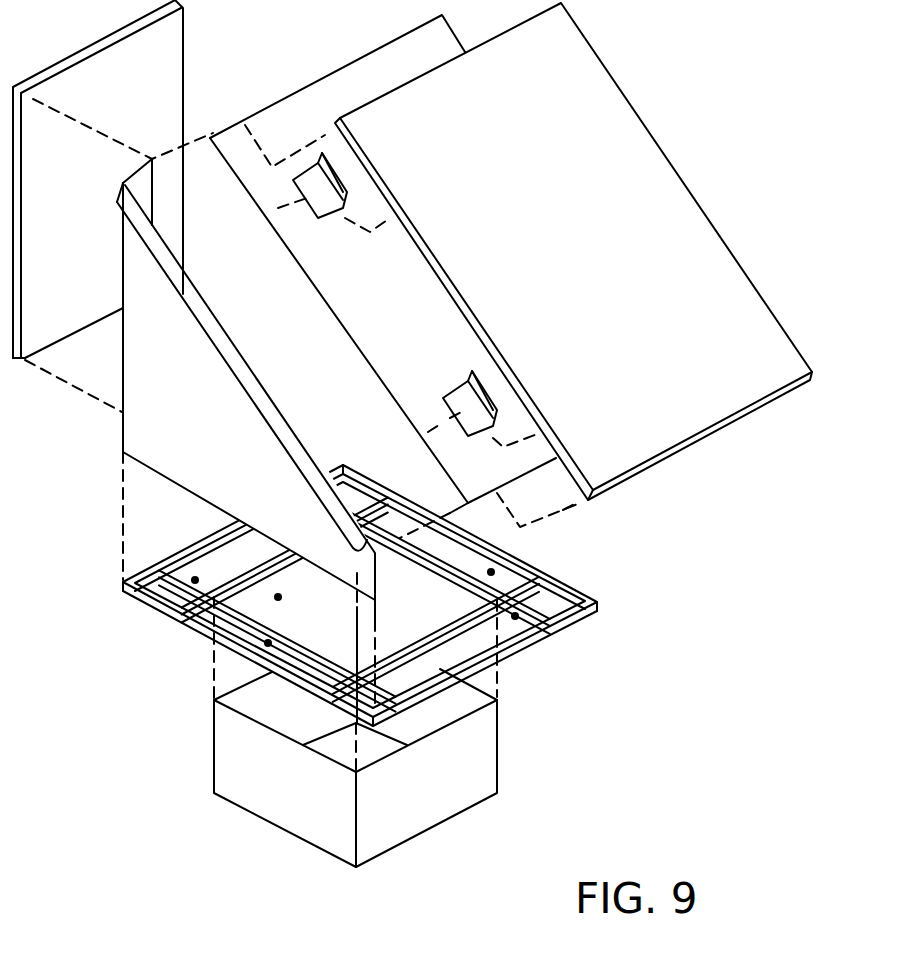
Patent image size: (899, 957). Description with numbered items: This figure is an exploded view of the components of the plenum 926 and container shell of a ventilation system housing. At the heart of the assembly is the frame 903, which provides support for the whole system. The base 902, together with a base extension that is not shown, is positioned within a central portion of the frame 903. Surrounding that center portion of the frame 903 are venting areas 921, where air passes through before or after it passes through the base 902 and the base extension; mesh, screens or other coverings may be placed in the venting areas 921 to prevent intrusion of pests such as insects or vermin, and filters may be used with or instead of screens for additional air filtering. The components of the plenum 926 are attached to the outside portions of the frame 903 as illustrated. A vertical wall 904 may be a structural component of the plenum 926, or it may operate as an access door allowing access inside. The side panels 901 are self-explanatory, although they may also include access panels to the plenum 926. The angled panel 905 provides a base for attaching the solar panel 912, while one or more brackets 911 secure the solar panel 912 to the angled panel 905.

The side panels 901 is at (123, 436).
The base 902 is at (497, 743).
The frame 903 is at (584, 610).
The vertical wall 904 is at (183, 57).
The angled panel 905 is at (373, 48).
The brackets 911 is at (307, 208).
The solar panel 912 is at (720, 432).
The venting areas 921 is at (195, 580).
The plenum 926 is at (268, 643).